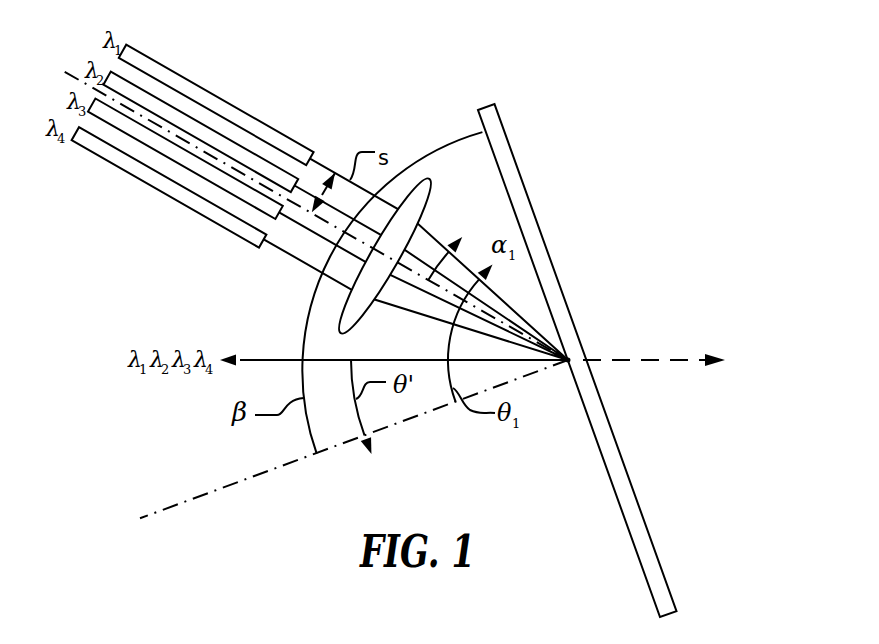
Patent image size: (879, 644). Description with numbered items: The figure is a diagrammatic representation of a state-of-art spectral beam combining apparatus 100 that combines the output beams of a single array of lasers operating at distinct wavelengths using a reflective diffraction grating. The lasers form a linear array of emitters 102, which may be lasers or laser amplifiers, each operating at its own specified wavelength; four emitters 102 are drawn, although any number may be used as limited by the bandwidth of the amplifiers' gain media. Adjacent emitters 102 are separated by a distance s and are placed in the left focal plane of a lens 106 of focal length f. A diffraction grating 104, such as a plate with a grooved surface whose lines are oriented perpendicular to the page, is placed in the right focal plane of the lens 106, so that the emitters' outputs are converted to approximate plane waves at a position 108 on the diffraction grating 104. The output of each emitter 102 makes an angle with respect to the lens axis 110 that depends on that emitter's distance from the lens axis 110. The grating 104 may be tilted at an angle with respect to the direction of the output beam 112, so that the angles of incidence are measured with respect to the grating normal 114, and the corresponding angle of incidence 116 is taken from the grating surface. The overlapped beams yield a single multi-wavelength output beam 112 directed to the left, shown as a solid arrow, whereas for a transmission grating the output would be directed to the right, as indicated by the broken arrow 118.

The spectral beam combining apparatus 100 is at (483, 500).
The emitters 102 is at (177, 72).
The diffraction grating 104 is at (540, 230).
The lens 106 is at (432, 183).
The position on diffraction grating 108 is at (578, 353).
The lens axis 110 is at (58, 66).
The output beam 112 is at (262, 358).
The grating normal 114 is at (214, 488).
The angle of incidence 116 is at (448, 145).
The broken arrow 118 is at (675, 360).